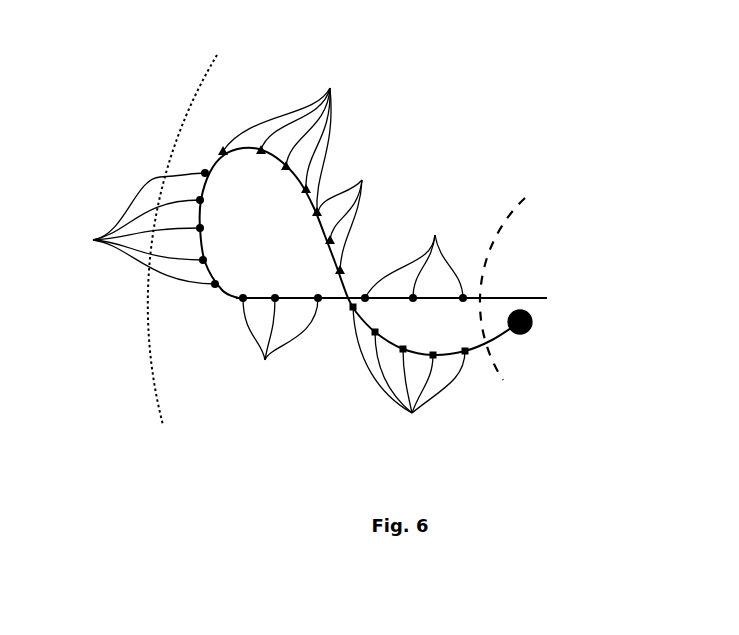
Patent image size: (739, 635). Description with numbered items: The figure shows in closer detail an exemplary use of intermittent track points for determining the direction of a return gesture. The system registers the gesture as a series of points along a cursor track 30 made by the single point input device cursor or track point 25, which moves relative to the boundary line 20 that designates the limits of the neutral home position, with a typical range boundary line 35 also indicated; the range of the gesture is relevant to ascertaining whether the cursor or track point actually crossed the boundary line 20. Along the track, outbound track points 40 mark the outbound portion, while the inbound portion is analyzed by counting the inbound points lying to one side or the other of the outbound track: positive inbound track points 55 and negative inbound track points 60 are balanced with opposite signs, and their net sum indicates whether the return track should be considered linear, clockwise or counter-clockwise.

The boundary line 20 is at (520, 200).
The single point input device cursor or track point 25 is at (527, 333).
The cursor track 30 is at (535, 298).
The typical range boundary line 35 is at (195, 93).
The outbound track points 40 is at (435, 229).
The positive inbound track points 55 is at (330, 88).
The negative inbound track points 60 is at (412, 413).